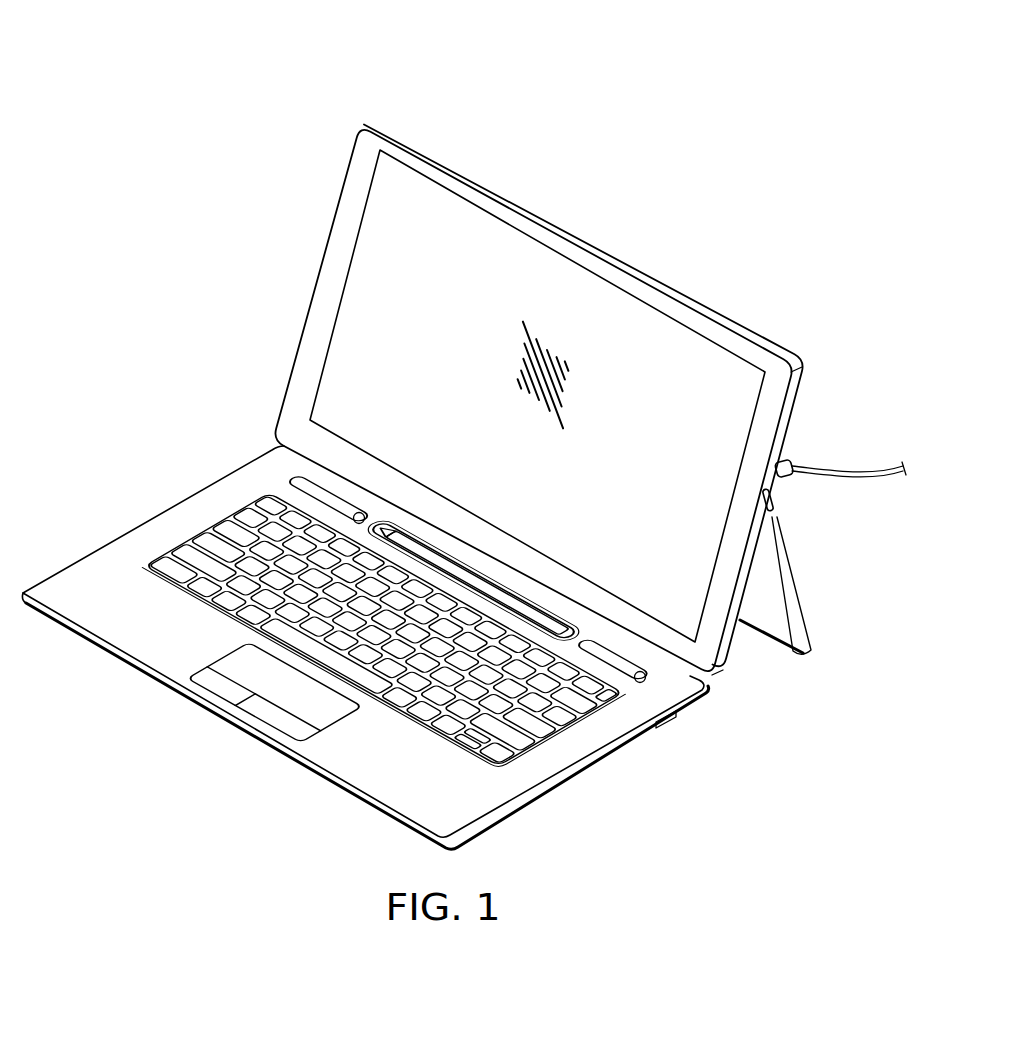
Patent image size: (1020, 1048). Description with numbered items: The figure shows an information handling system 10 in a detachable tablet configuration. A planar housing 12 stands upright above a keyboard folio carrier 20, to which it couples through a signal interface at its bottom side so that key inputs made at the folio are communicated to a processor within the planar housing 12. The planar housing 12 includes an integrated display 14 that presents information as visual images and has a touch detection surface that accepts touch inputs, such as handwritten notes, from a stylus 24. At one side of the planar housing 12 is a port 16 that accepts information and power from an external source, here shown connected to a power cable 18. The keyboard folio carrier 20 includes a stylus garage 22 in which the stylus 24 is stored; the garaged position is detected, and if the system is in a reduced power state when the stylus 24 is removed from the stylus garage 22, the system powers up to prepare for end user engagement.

The information handling system 10 is at (311, 123).
The planar housing 12 is at (590, 238).
The integrated display 14 is at (740, 373).
The port 16 is at (777, 500).
The power cable 18 is at (847, 476).
The keyboard folio carrier 20 is at (146, 532).
The stylus garage 22 is at (537, 607).
The stylus 24 is at (432, 560).